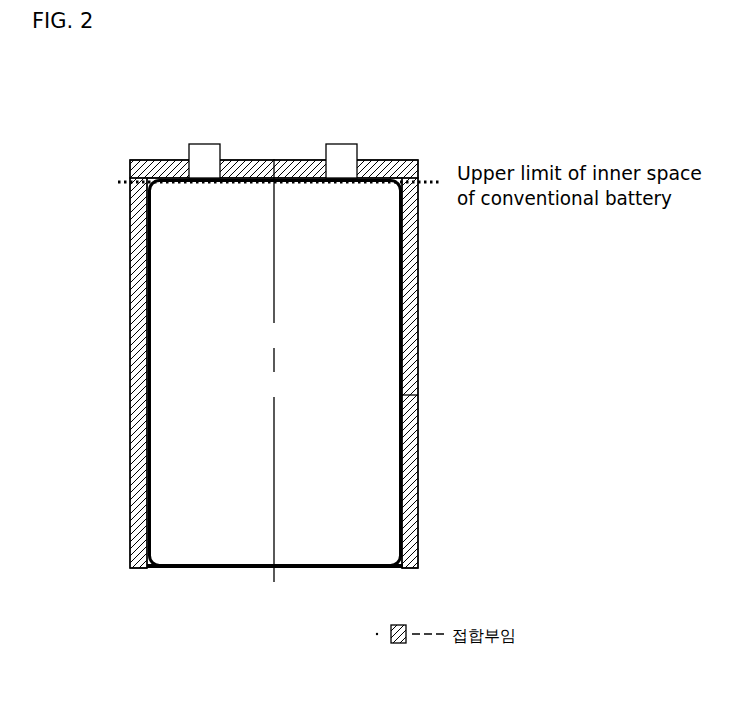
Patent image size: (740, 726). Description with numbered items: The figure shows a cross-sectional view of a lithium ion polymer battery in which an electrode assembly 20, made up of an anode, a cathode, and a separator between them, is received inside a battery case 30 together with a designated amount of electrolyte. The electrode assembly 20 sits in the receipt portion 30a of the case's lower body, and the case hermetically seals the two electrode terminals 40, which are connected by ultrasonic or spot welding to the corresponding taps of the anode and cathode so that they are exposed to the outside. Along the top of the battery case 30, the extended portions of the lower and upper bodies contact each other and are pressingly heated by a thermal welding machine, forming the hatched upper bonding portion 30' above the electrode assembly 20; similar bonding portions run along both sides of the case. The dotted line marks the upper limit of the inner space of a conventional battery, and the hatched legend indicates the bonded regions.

The electrode assembly 20 is at (203, 556).
The battery case 30 is at (289, 319).
The upper bonding portion 30' is at (274, 124).
The receipt portion 30a is at (405, 395).
The electrode terminals 40 is at (205, 147).